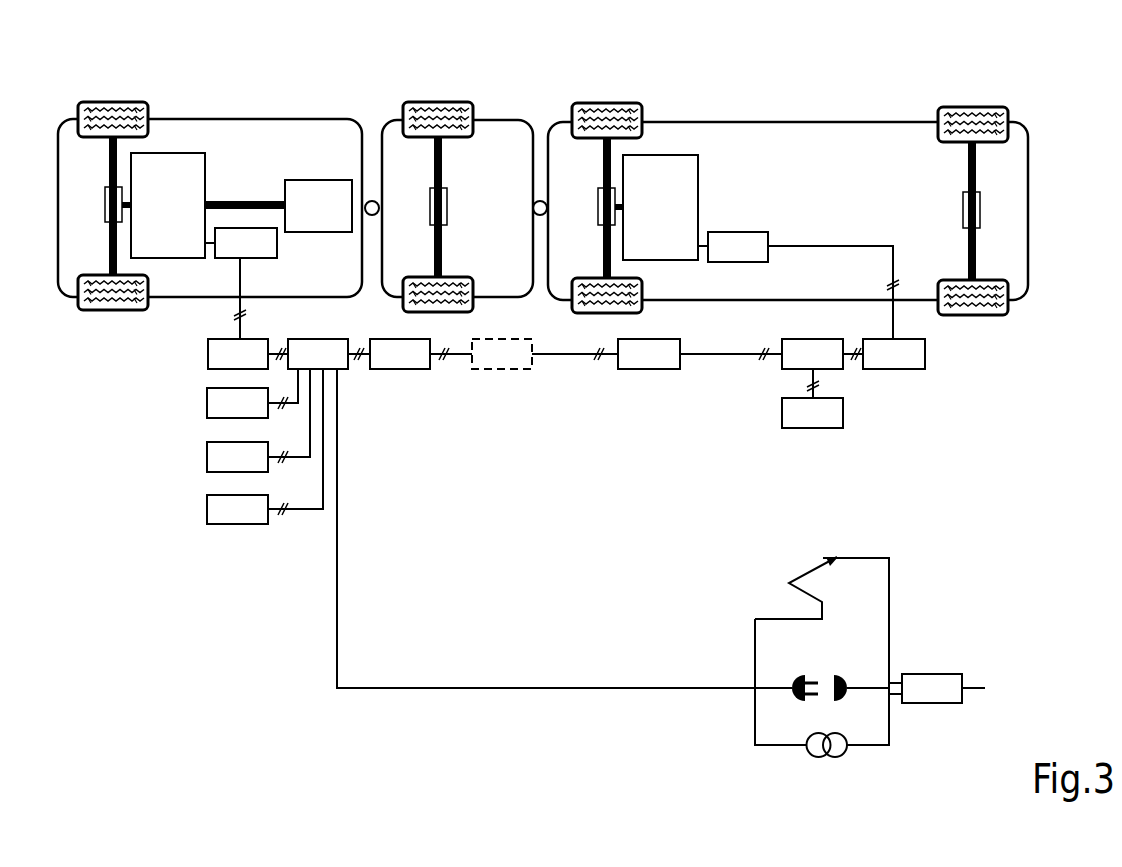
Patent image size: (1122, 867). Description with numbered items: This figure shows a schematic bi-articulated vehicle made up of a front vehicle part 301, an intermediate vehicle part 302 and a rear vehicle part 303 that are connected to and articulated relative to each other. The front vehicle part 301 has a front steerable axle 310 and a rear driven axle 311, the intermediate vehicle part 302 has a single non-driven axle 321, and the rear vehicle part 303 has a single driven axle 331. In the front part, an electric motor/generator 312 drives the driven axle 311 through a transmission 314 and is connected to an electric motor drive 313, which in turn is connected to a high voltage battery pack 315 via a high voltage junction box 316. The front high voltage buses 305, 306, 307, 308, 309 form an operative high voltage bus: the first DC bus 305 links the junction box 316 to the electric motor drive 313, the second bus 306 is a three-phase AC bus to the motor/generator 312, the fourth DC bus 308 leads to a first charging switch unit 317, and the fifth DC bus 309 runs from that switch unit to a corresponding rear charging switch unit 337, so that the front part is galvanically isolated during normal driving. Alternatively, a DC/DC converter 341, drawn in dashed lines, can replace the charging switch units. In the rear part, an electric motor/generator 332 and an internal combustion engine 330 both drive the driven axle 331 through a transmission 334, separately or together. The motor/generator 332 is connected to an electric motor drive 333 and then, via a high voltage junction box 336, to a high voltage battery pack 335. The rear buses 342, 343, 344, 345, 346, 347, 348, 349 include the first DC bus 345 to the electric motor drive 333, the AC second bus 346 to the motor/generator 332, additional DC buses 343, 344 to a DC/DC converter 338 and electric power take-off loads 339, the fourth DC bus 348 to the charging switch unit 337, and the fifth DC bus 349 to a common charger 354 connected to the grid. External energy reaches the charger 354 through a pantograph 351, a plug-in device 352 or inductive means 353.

The front vehicle part 301 is at (835, 130).
The intermediate vehicle part 302 is at (457, 173).
The rear vehicle part 303 is at (260, 120).
The first DC bus 305 is at (852, 358).
The second bus 306 is at (897, 327).
The high voltage bus 307 is at (812, 388).
The fourth DC bus 308 is at (692, 362).
The fifth DC bus 309 is at (580, 355).
The front steerable axle 310 is at (970, 105).
The rear driven axle 311 is at (607, 102).
The electric motor/generator 312 is at (733, 247).
The electric motor drive 313 is at (894, 354).
The transmission 314 is at (668, 165).
The high voltage battery pack 315 is at (812, 413).
The high voltage junction box 316 is at (812, 354).
The first charging switch unit 317 is at (649, 354).
The non-driven axle 321 is at (438, 102).
The internal combustion engine 330 is at (320, 193).
The driven axle 331 is at (112, 100).
The electric motor/generator 332 is at (241, 243).
The electric motor drive 333 is at (238, 354).
The transmission 334 is at (183, 160).
The high voltage battery pack 335 is at (237, 509).
The high voltage junction box 336 is at (318, 354).
The charging switch unit 337 is at (400, 354).
The DC/DC converter 338 is at (237, 403).
The electric power take-off loads 339 is at (237, 457).
The DC/DC converter 341 is at (502, 354).
The high voltage bus 342 is at (458, 355).
The additional DC bus 343 is at (292, 408).
The additional DC bus 344 is at (290, 460).
The first DC bus 345 is at (275, 358).
The second bus 346 is at (237, 312).
The high voltage bus 347 is at (290, 515).
The fourth DC bus 348 is at (360, 347).
The fifth DC bus 349 is at (335, 590).
The pantograph 351 is at (855, 562).
The plug-in device 352 is at (832, 668).
The inductive means 353 is at (848, 752).
The charger 354 is at (937, 688).